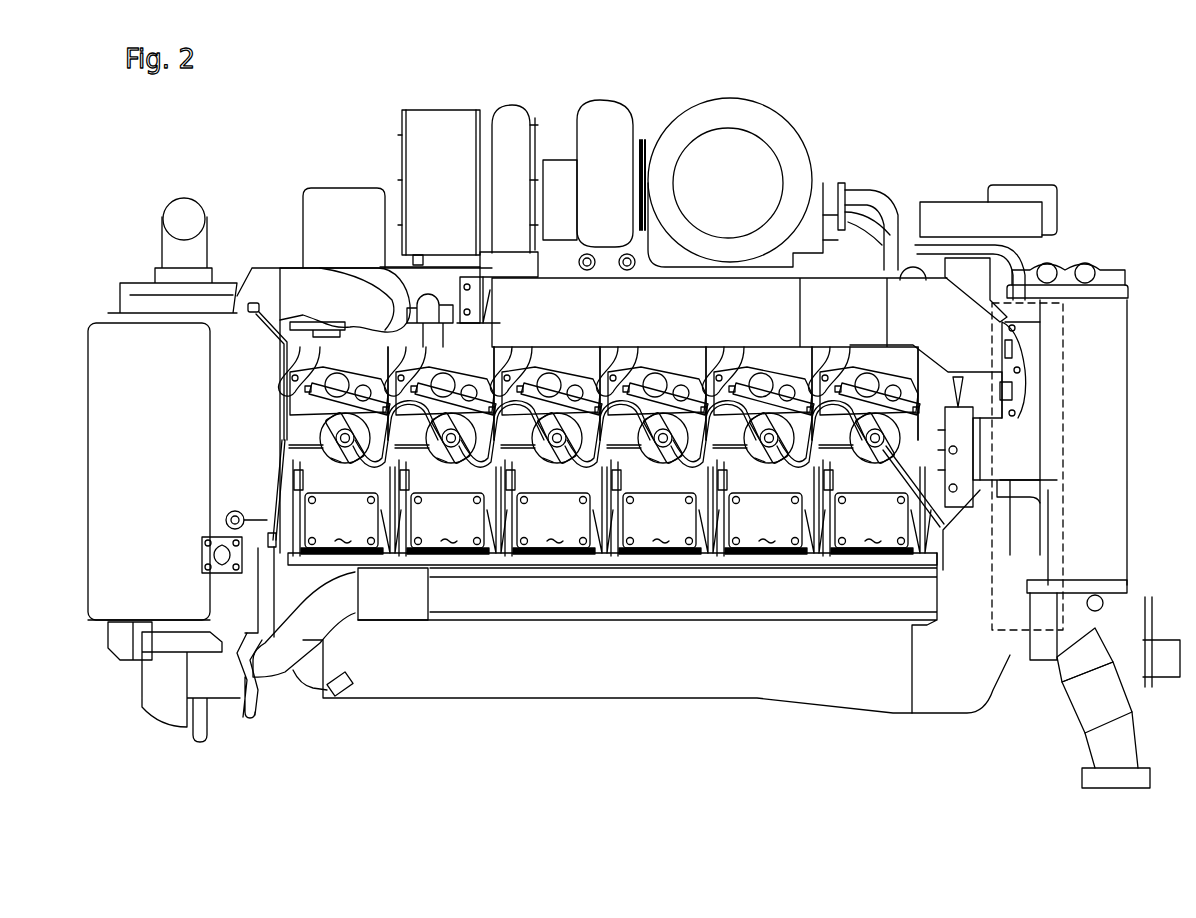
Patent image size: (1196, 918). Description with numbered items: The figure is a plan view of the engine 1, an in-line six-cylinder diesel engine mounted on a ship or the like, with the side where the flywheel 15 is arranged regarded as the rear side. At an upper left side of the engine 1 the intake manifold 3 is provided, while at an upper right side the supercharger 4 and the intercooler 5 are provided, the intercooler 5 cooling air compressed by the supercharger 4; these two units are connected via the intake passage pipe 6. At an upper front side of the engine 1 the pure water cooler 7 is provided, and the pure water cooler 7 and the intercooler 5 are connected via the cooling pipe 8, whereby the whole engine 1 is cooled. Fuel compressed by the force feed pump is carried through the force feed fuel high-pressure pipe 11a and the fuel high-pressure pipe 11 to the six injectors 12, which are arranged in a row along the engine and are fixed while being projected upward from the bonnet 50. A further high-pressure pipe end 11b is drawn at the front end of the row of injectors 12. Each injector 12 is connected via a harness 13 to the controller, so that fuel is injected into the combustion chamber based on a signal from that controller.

The engine 1 is at (1135, 96).
The intake manifold 3 is at (557, 705).
The supercharger 4 is at (630, 118).
The intercooler 5 is at (1105, 373).
The intake passage pipe 6 is at (912, 290).
The pure water cooler 7 is at (154, 482).
The cooling pipe 8 is at (280, 665).
The fuel high-pressure pipe 11 is at (361, 475).
The force feed fuel high-pressure pipe 11a is at (898, 475).
The fuel pipe end 11b is at (289, 420).
The injector 12 is at (351, 398).
The harness 13 is at (318, 450).
The flywheel 15 is at (1065, 440).
The bonnet 50 is at (606, 520).